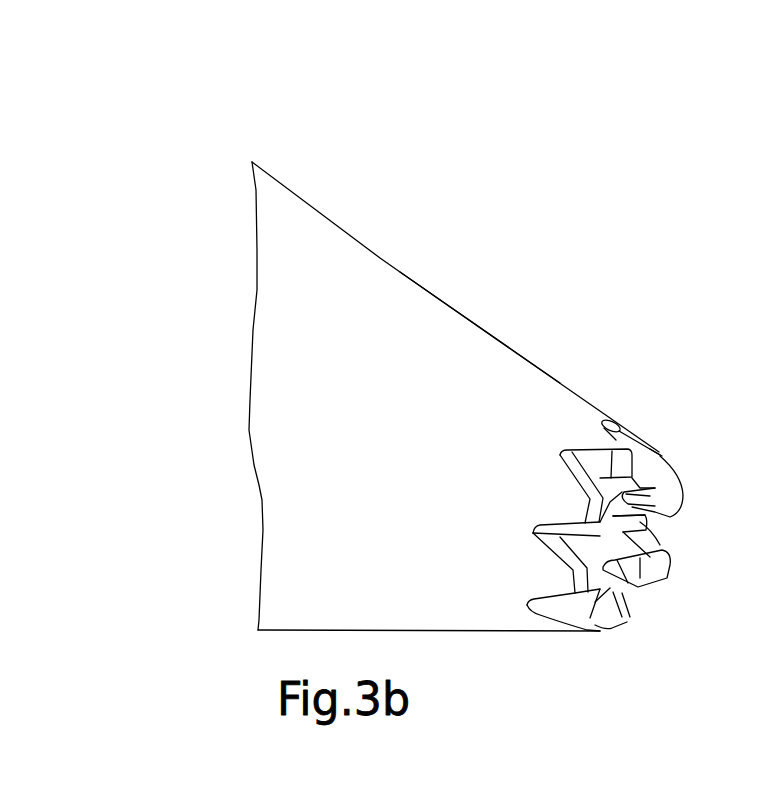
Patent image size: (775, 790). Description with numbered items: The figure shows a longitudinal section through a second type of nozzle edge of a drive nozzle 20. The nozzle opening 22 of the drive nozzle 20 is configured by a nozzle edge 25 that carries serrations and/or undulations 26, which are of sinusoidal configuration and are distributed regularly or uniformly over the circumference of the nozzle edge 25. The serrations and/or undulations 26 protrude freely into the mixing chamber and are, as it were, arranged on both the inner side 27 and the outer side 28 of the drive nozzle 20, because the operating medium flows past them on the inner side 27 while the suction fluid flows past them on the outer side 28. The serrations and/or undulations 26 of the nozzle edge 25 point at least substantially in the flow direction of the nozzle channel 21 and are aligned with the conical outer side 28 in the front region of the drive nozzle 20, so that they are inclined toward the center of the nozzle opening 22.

The drive nozzle 20 is at (224, 95).
The nozzle channel 21 is at (606, 552).
The nozzle opening 22 is at (654, 498).
The nozzle edge 25 is at (671, 448).
The serrations and/or undulations 26 is at (620, 422).
The inner side 27 is at (626, 523).
The outer side 28 is at (513, 358).